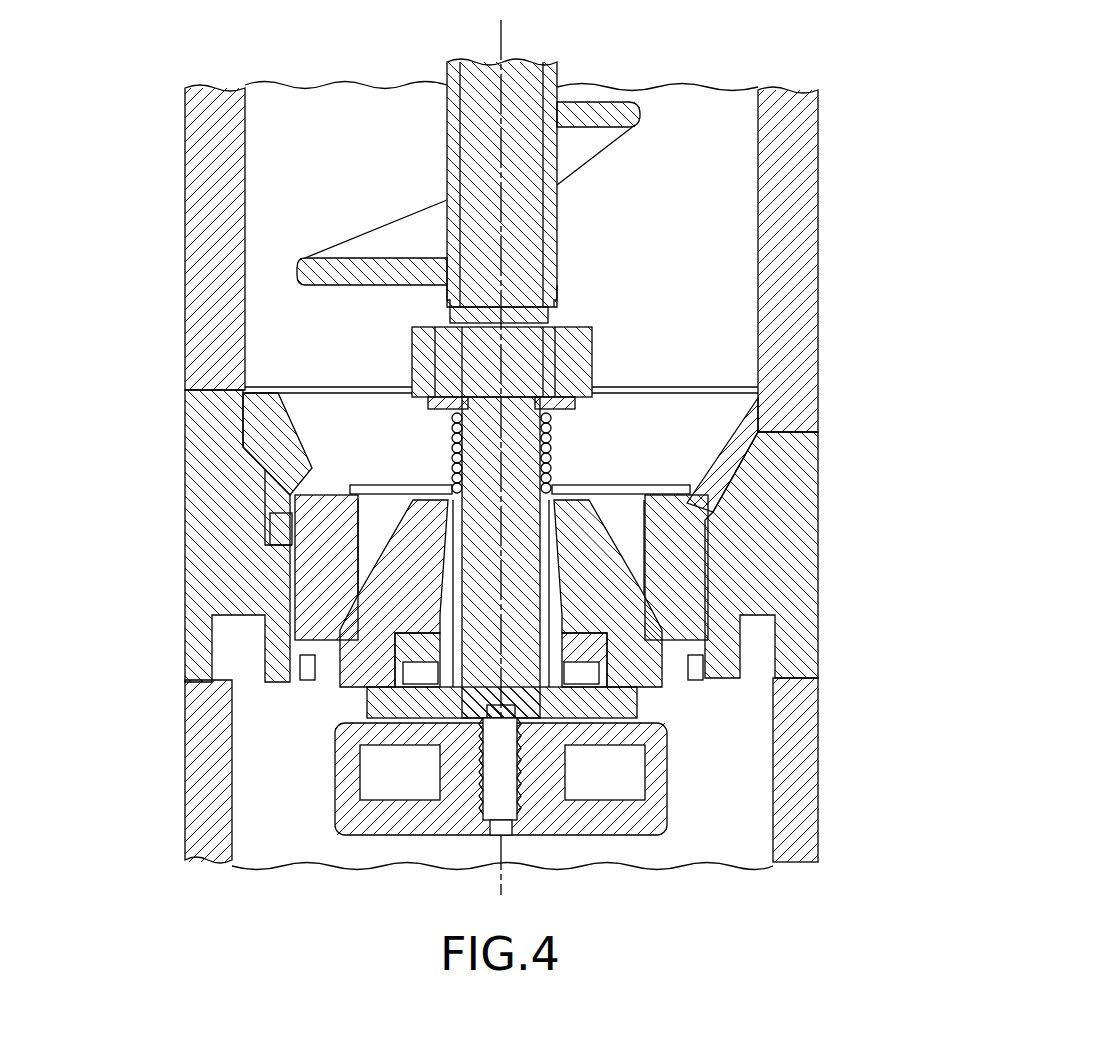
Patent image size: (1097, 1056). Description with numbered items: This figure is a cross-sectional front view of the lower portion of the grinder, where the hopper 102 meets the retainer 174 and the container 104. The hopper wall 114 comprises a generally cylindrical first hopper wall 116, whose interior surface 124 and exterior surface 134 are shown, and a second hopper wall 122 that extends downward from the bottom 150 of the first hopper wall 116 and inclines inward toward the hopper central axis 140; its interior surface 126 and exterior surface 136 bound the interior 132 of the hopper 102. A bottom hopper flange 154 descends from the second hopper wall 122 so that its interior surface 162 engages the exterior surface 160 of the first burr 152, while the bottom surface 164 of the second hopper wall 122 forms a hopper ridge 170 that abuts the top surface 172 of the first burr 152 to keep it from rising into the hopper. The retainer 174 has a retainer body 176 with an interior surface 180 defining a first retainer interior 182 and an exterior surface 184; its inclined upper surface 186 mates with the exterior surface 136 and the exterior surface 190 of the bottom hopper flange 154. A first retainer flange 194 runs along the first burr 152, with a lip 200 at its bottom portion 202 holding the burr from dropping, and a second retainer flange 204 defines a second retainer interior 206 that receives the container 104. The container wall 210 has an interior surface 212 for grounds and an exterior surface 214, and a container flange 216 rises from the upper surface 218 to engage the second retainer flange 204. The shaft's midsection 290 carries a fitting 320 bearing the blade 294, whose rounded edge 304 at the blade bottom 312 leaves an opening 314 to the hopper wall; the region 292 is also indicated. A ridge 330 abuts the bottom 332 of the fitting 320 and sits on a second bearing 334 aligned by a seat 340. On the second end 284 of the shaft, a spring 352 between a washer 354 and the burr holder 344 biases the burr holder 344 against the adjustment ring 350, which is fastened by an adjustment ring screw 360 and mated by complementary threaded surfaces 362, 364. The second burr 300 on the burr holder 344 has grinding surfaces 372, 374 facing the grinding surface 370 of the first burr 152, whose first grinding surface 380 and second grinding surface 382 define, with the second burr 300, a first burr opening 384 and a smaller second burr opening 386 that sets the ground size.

The hopper 102 is at (160, 228).
The container 104 is at (855, 833).
The hopper wall 114 is at (508, 281).
The first hopper wall 116 is at (795, 128).
The second hopper wall 122 is at (252, 440).
The interior surface 124 is at (758, 180).
The interior surface 126 is at (248, 412).
The interior 132 is at (330, 148).
The exterior surface 134 is at (793, 200).
The exterior surface 136 is at (760, 490).
The hopper central axis 140 is at (510, 95).
The bottom 150 is at (215, 355).
The first burr 152 is at (745, 565).
The bottom hopper flange 154 is at (270, 525).
The exterior surface 160 is at (760, 575).
The interior surface 162 is at (250, 472).
The bottom surface 164 is at (295, 400).
The hopper ridge 170 is at (325, 487).
The top surface 172 is at (325, 495).
The retainer 174 is at (160, 560).
The retainer body 176 is at (235, 550).
The interior surface 180 is at (268, 540).
The first retainer interior 182 is at (640, 520).
The exterior surface 184 is at (270, 615).
The upper surface 186 is at (775, 472).
The exterior surface 190 is at (270, 505).
The first retainer flange 194 is at (270, 645).
The lip 200 is at (305, 672).
The bottom portion 202 is at (275, 690).
The second retainer flange 204 is at (215, 640).
The second retainer interior 206 is at (770, 630).
The container wall 210 is at (230, 795).
The interior surface 212 is at (232, 815).
The exterior surface 214 is at (190, 848).
The container flange 216 is at (215, 662).
The upper surface 218 is at (228, 685).
The second end 284 is at (485, 680).
The midsection 290 is at (488, 195).
The gap 292 is at (635, 310).
The blade 294 is at (600, 120).
The second burr 300 is at (745, 605).
The edge 304 is at (640, 115).
The bottom 312 is at (375, 247).
The opening 314 is at (260, 287).
The fitting 320 is at (447, 195).
The ridge 330 is at (548, 318).
The bottom 332 is at (560, 300).
The second bearing 334 is at (585, 348).
The seat 340 is at (560, 380).
The burr holder 344 is at (600, 693).
The adjustment ring 350 is at (345, 810).
The spring 352 is at (552, 440).
The washer 354 is at (550, 404).
The adjustment ring screw 360 is at (487, 805).
The threaded surface 362 is at (545, 735).
The threaded surface 364 is at (470, 788).
The grinding surface 370 is at (264, 530).
The grinding surface 372 is at (852, 660).
The grinding surface 374 is at (770, 655).
The first grinding surface 380 is at (340, 515).
The second grinding surface 382 is at (290, 622).
The first burr opening 384 is at (612, 515).
The second burr opening 386 is at (675, 662).